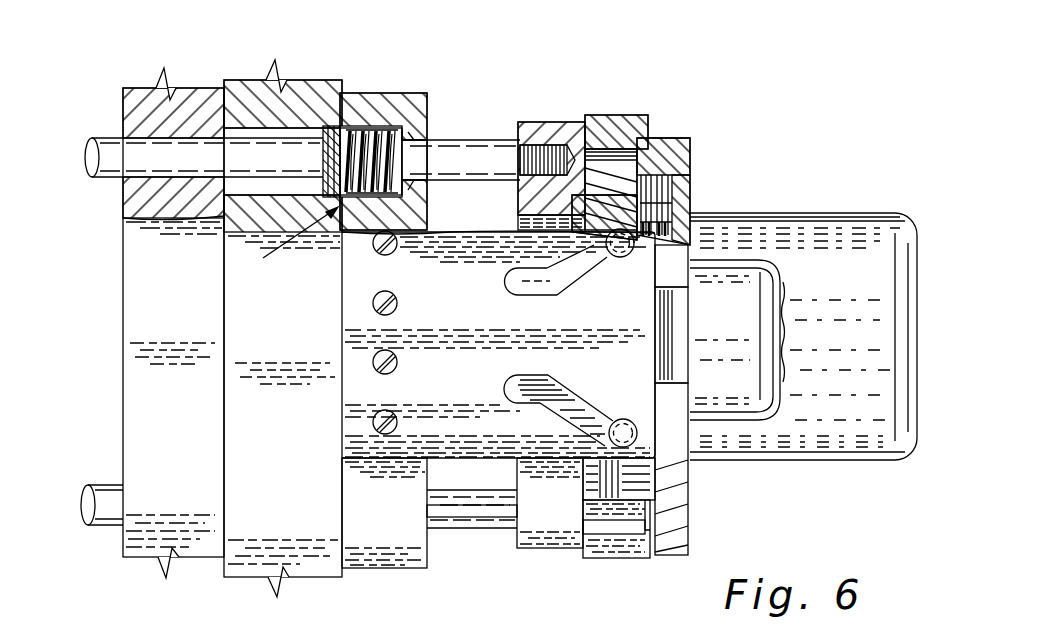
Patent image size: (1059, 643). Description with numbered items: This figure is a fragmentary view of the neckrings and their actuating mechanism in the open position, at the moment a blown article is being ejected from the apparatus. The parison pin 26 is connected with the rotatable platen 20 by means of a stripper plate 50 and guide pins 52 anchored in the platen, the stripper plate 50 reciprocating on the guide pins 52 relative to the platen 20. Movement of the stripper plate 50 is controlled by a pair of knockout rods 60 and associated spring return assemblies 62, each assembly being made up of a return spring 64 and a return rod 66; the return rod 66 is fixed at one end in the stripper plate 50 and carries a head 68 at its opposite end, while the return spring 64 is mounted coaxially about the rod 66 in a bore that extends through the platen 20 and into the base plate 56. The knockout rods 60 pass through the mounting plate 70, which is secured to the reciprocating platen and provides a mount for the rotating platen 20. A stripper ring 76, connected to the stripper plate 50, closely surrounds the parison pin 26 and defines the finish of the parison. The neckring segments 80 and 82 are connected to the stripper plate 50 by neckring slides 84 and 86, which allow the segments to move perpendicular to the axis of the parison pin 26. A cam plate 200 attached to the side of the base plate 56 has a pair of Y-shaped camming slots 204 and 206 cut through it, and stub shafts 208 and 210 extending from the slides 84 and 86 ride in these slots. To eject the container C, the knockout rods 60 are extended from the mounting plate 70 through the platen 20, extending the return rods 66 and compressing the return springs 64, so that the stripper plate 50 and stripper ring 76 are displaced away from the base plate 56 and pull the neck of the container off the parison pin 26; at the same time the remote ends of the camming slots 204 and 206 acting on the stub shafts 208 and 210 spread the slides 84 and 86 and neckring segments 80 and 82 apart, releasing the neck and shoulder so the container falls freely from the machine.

The rotatable platen 20 is at (295, 88).
The parison pin 26 is at (767, 322).
The stripper plate 50 is at (558, 123).
The guide pins 52 is at (468, 527).
The base plate 56 is at (407, 100).
The knockout rods 60 is at (110, 140).
The spring return assemblies 62 is at (286, 243).
The return spring 64 is at (360, 128).
The return rod 66 is at (442, 152).
The head 68 is at (331, 133).
The mounting plate 70 is at (178, 100).
The stripper ring 76 is at (640, 198).
The neckring segment 80 is at (692, 153).
The neckring segment 82 is at (673, 493).
The neckring slide 84 is at (637, 113).
The neckring slide 86 is at (631, 556).
The cam plate 200 is at (445, 409).
The camming slot 204 is at (517, 279).
The camming slot 206 is at (523, 376).
The stub shaft 208 is at (610, 252).
The stub shaft 210 is at (620, 425).
The cylinder C is at (787, 218).